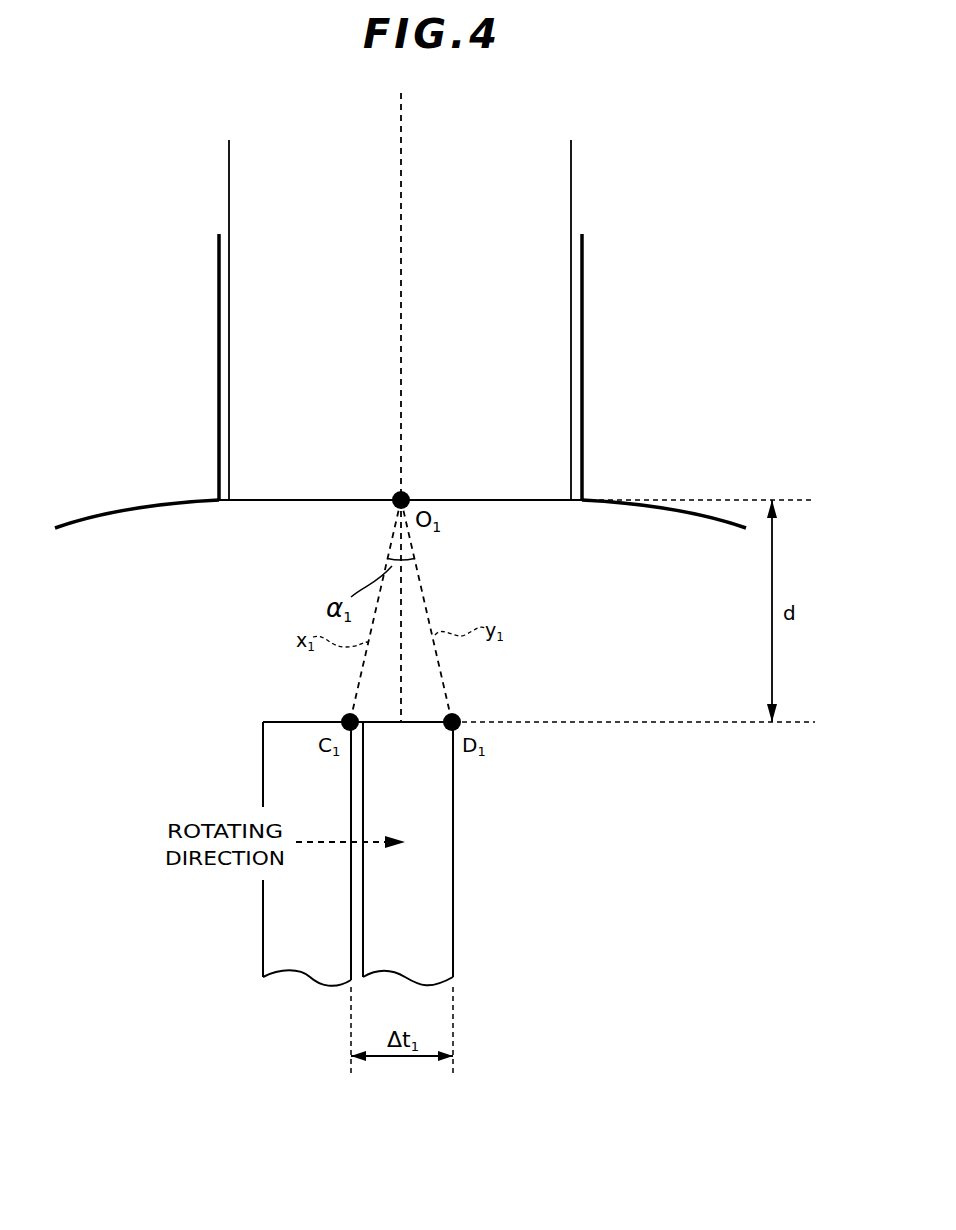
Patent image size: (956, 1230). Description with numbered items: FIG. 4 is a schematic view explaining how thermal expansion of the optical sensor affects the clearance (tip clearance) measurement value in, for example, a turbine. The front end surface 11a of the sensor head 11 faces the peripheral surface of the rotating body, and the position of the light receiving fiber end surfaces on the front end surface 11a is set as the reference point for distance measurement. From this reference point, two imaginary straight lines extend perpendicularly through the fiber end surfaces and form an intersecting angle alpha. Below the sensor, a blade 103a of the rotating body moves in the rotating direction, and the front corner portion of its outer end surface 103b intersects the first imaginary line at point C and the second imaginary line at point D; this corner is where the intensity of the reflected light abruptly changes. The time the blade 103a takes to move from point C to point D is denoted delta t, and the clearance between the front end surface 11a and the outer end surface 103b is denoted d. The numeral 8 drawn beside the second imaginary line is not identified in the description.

The sensor head 11 is at (250, 184).
The front end surface 11a is at (283, 500).
The detection light 8 is at (431, 584).
The blade 103a is at (278, 923).
The outer end surface 103b is at (287, 720).